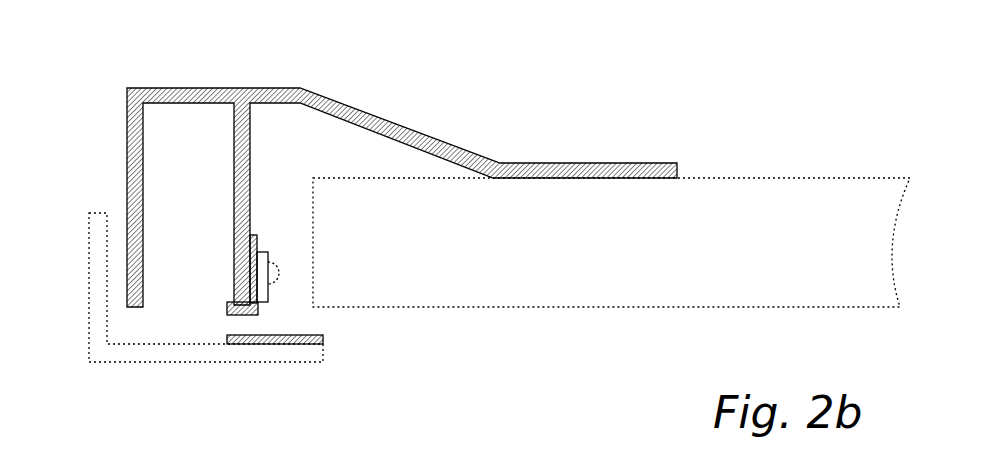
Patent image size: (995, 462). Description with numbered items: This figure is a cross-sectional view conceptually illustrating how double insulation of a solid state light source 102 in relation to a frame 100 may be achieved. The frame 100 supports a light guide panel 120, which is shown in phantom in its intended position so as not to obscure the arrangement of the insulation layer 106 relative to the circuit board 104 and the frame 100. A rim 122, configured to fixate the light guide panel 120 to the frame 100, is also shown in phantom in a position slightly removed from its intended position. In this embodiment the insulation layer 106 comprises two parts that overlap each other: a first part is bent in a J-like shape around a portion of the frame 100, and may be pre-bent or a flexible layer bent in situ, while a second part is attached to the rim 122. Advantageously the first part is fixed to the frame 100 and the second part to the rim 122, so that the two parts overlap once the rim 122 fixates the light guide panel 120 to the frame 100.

The frame 100 is at (276, 88).
The solid state light source 102 is at (278, 280).
The circuit board 104 is at (262, 250).
The insulation layer 106 is at (232, 300).
The light guide panel 120 is at (527, 308).
The rim 122 is at (140, 363).